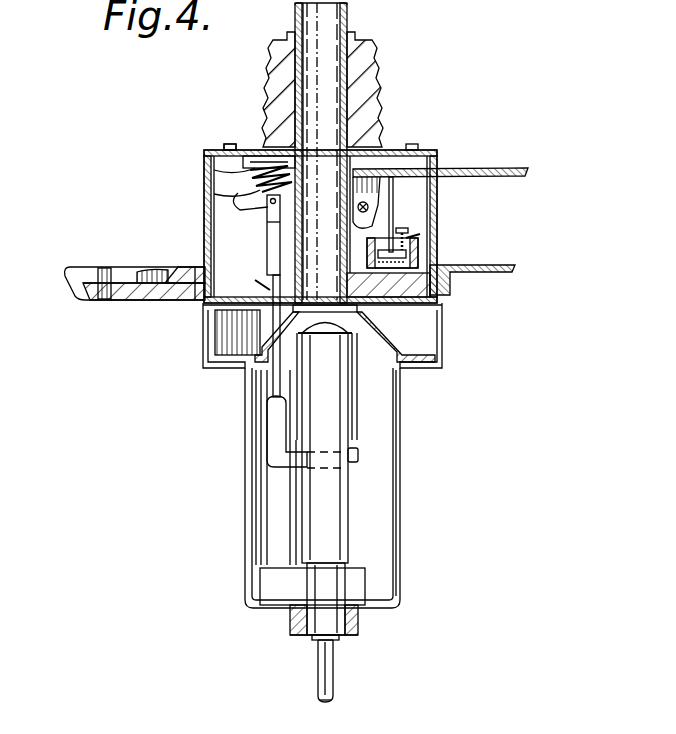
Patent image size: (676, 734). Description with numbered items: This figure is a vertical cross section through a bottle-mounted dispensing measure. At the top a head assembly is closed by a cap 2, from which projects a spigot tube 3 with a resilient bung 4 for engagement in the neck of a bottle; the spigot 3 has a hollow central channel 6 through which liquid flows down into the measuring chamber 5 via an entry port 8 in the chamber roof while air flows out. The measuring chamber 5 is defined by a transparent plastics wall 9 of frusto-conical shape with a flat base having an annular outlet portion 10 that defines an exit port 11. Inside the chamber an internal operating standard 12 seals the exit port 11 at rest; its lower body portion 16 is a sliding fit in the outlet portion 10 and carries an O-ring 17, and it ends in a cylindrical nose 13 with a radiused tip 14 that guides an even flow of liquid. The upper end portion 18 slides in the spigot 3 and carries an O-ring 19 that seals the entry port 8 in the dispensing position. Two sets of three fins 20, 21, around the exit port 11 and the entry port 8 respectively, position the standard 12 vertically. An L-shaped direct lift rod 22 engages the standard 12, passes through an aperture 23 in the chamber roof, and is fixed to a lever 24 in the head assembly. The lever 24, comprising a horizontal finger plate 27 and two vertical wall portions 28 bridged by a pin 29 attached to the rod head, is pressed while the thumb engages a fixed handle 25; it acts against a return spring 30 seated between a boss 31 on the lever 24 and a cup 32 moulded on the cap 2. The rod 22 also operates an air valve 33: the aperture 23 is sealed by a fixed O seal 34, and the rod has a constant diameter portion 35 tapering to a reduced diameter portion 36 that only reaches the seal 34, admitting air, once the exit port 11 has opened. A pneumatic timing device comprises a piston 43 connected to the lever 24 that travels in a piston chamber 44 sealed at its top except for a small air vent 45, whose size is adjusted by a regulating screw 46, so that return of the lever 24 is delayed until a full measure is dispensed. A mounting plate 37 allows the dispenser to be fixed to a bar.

The cap 2 is at (432, 158).
The spigot tube 3 is at (347, 9).
The resilient bung 4 is at (357, 87).
The measuring chamber 5 is at (270, 511).
The hollow central channel 6 is at (327, 51).
The entry port 8 is at (360, 312).
The transparent plastics wall 9 is at (400, 469).
The annular outlet portion 10 is at (358, 625).
The exit port 11 is at (312, 643).
The internal operating standard 12 is at (328, 513).
The nose 13 is at (333, 668).
The radiused tip 14 is at (332, 699).
The lower body portion 16 is at (322, 620).
The O-ring 17 is at (320, 646).
The upper end portion 18 is at (272, 352).
The O-ring 19 is at (393, 352).
The fins 20 is at (355, 585).
The fins 21 is at (355, 372).
The direct lift rod 22 is at (268, 458).
The aperture 23 is at (268, 322).
The lever 24 is at (282, 150).
The fixed handle 25 is at (515, 268).
The horizontal finger plate 27 is at (520, 168).
The vertical wall portions 28 is at (244, 198).
The pin 29 is at (268, 204).
The return spring 30 is at (255, 166).
The boss 31 is at (258, 188).
The cup 32 is at (230, 145).
The air valve 33 is at (158, 295).
The O seal 34 is at (145, 276).
The constant diameter portion 35 is at (212, 265).
The reduced diameter portion 36 is at (226, 290).
The mounting plate 37 is at (70, 267).
The piston 43 is at (418, 249).
The piston chamber 44 is at (418, 285).
The air vent 45 is at (424, 235).
The regulating screw 46 is at (405, 228).